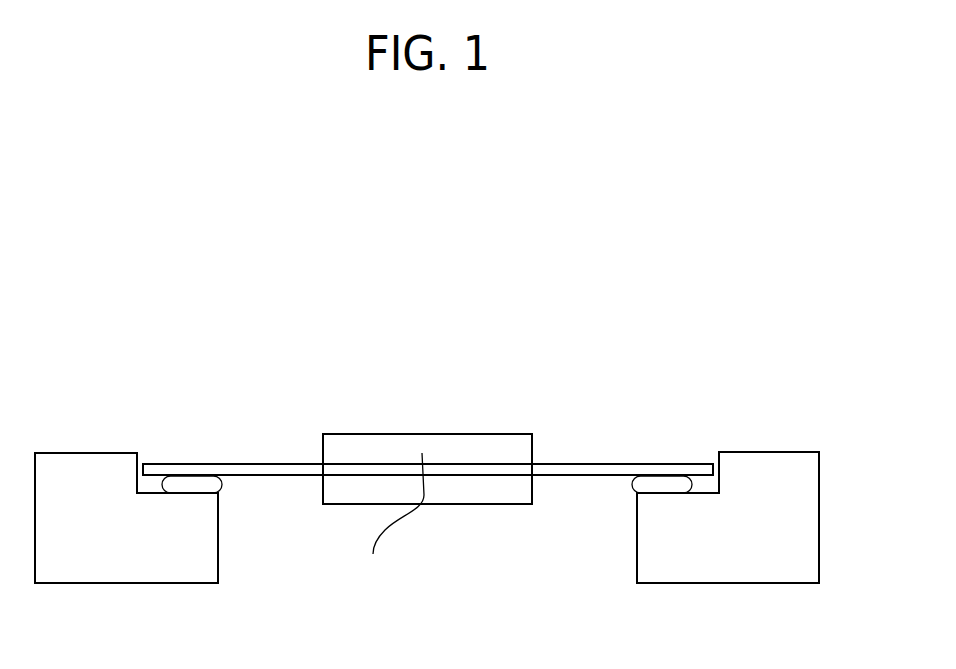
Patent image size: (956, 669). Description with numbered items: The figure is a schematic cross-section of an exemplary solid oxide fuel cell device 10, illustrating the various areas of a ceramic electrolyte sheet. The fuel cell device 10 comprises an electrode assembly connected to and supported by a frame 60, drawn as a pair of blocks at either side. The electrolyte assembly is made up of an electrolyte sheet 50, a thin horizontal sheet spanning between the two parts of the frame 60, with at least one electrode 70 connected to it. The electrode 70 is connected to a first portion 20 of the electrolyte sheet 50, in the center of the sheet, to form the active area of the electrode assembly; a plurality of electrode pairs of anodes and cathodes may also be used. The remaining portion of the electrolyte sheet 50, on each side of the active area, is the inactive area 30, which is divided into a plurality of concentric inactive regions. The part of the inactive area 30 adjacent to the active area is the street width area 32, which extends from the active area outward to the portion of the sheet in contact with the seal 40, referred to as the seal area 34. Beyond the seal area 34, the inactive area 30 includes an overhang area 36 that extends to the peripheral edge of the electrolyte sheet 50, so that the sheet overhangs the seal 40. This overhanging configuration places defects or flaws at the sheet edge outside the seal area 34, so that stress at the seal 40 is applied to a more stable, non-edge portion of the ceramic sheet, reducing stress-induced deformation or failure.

The solid oxide fuel cell device 10 is at (456, 294).
The first portion of the electrolyte sheet 20 is at (532, 409).
The inactive area 30 is at (142, 371).
The street width area 32 is at (322, 446).
The seal area 34 is at (225, 446).
The overhang area 36 is at (142, 450).
The seal 40 is at (223, 490).
The electrolyte sheet 50 is at (563, 477).
The frame 60 is at (130, 583).
The electrode 70 is at (385, 505).